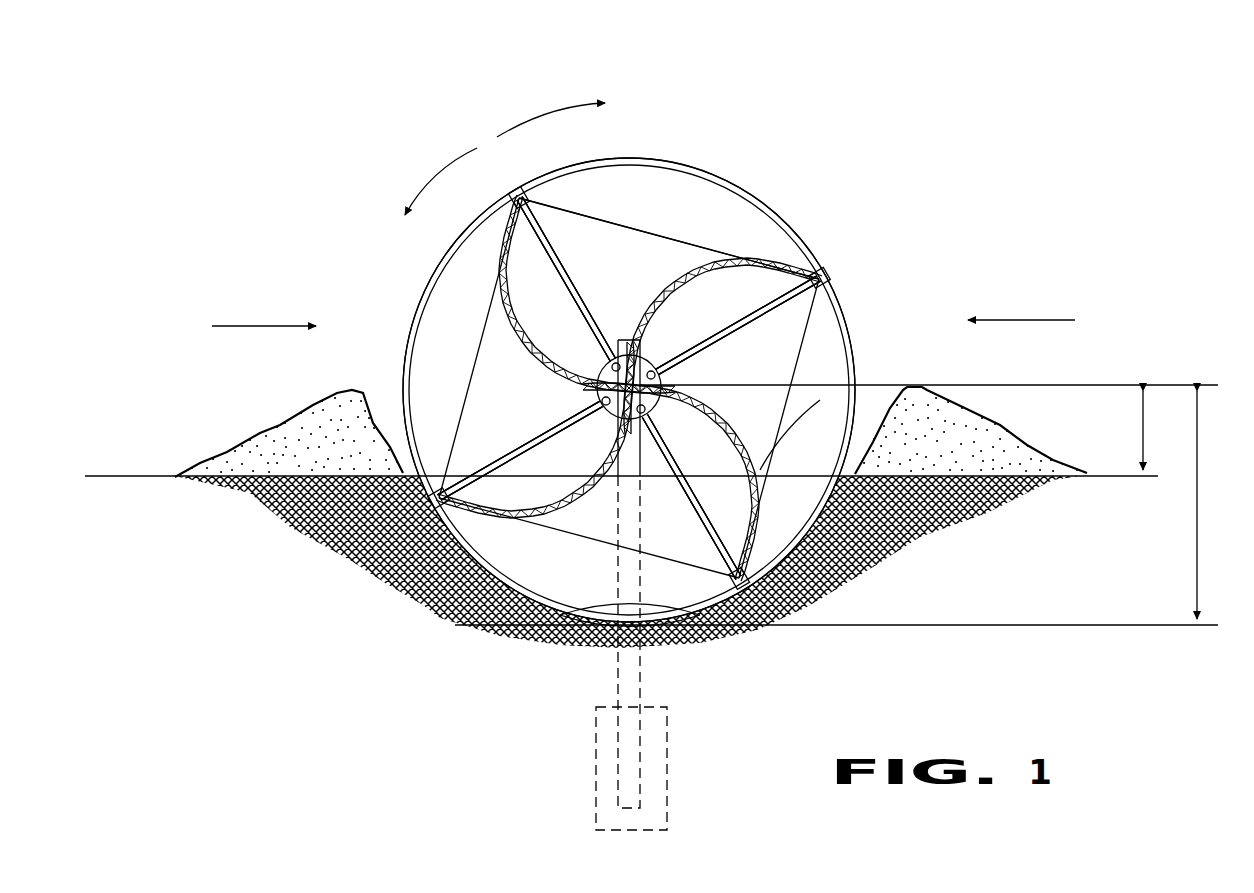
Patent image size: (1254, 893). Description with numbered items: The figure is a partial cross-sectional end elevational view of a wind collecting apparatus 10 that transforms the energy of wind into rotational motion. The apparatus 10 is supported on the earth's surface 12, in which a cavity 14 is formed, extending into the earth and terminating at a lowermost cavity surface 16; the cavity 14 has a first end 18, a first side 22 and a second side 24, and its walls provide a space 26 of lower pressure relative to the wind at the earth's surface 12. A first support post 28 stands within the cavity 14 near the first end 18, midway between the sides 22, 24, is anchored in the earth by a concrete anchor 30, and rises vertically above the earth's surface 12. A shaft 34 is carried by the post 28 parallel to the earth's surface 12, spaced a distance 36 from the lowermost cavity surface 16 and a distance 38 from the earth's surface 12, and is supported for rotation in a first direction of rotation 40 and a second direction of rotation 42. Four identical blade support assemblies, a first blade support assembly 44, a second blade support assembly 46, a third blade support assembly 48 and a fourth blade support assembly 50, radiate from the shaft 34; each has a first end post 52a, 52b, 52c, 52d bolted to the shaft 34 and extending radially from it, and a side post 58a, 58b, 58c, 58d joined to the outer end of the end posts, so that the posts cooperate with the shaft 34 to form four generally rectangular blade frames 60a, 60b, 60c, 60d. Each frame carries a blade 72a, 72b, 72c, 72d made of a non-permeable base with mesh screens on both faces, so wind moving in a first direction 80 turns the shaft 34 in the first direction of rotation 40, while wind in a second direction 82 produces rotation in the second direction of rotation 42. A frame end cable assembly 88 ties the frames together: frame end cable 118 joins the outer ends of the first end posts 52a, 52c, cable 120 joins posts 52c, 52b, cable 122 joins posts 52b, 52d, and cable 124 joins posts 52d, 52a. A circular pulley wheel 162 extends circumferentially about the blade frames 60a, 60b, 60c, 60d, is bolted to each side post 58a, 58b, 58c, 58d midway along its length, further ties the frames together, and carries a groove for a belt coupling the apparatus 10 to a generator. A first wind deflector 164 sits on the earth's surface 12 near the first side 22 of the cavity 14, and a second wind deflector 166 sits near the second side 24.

The wind collecting apparatus 10 is at (802, 162).
The earth's surface 12 is at (118, 472).
The cavity 14 is at (500, 593).
The lowermost cavity surface 16 is at (582, 630).
The first end 18 is at (793, 483).
The first side 22 is at (440, 523).
The second side 24 is at (870, 520).
The space 26 is at (655, 585).
The first support post 28 is at (632, 700).
The concrete anchor 30 is at (595, 750).
The shaft 34 is at (596, 391).
The distance 36 is at (1197, 504).
The distance 38 is at (1143, 420).
The first direction of rotation 40 is at (452, 168).
The second direction of rotation 42 is at (548, 120).
The first blade support assembly 44 is at (568, 262).
The second blade support assembly 46 is at (690, 522).
The third blade support assembly 48 is at (512, 450).
The fourth blade support assembly 50 is at (747, 325).
The first end post 52a is at (579, 294).
The first end post 52b is at (705, 470).
The first end post 52c is at (540, 443).
The first end post 52d is at (740, 318).
The side post 58a is at (521, 192).
The side post 58b is at (783, 585).
The side post 58c is at (440, 485).
The side post 58d is at (824, 278).
The first blade frame 60a is at (572, 313).
The second blade frame 60b is at (712, 552).
The third blade frame 60c is at (540, 440).
The fourth blade frame 60d is at (778, 308).
The blade 72a is at (497, 267).
The blade 72b is at (744, 434).
The blade 72c is at (572, 509).
The blade 72d is at (700, 268).
The first direction 80 is at (1036, 320).
The second direction 82 is at (265, 326).
The frame end cable assembly 88 is at (642, 211).
The frame end cable 118 is at (480, 317).
The frame end cable 120 is at (455, 625).
The frame end cable 122 is at (767, 488).
The frame end cable 124 is at (733, 250).
The pulley wheel 162 is at (483, 218).
The first wind deflector 164 is at (272, 421).
The second wind deflector 166 is at (1028, 437).